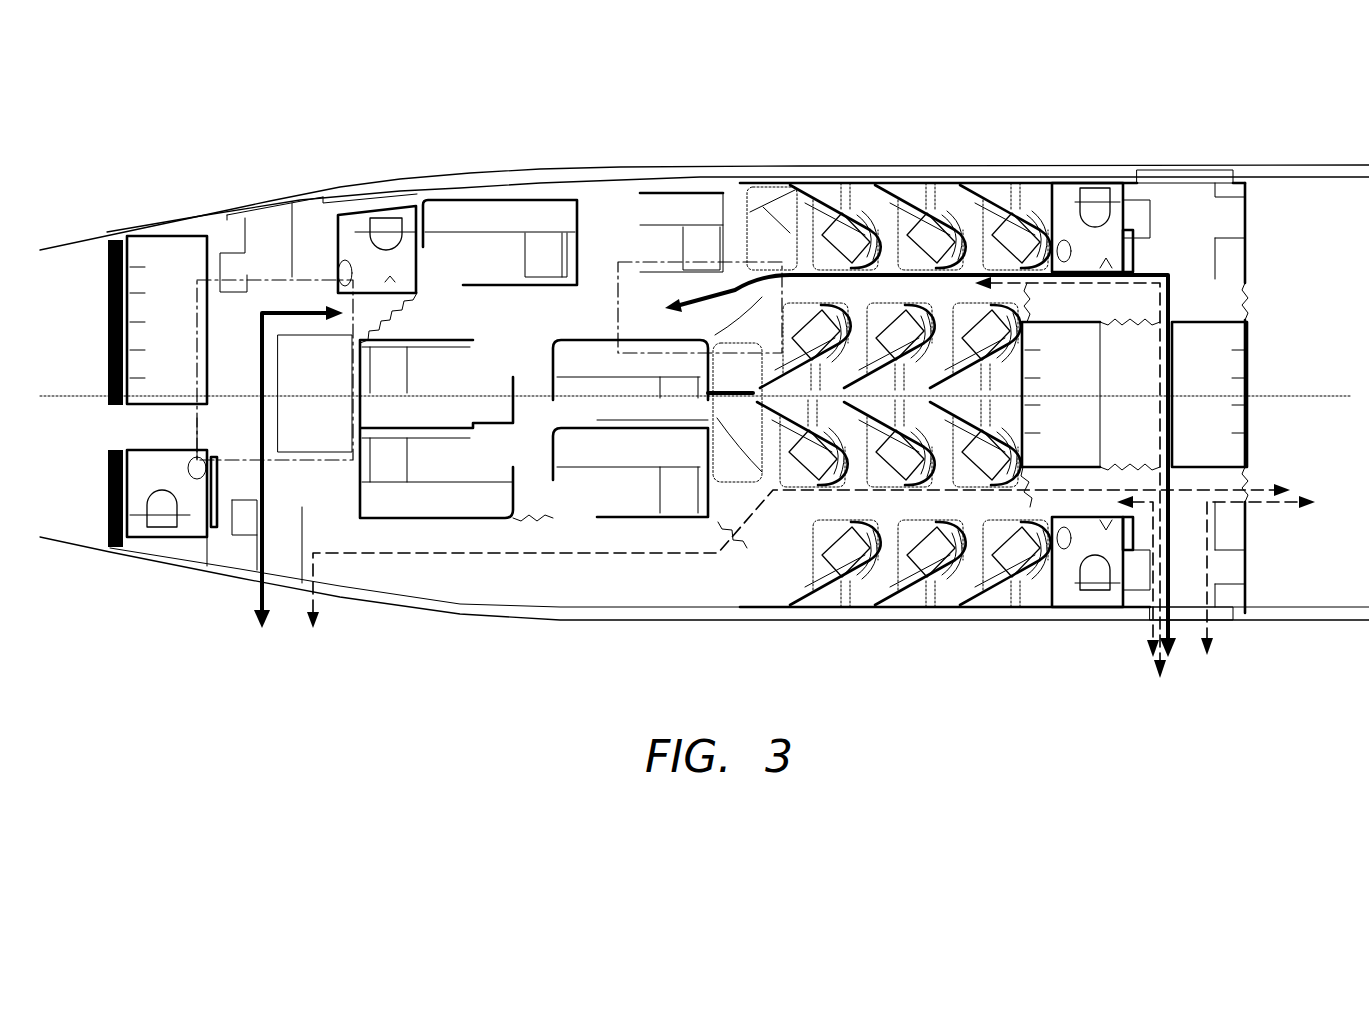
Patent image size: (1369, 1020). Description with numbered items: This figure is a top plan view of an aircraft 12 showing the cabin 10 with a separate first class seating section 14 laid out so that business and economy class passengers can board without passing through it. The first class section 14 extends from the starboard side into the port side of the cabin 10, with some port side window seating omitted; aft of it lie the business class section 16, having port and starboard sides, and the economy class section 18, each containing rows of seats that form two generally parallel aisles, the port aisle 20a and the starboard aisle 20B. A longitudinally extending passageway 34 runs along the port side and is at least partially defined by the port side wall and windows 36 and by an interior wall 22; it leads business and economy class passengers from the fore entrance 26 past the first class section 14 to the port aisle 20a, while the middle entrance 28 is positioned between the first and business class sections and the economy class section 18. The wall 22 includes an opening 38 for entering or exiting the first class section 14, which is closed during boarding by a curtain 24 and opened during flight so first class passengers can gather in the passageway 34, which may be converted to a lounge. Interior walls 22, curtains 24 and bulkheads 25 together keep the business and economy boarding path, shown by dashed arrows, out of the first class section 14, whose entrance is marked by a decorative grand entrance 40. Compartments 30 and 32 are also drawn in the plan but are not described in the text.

The cabin 10 is at (160, 425).
The aircraft 12 is at (447, 182).
The first class seating section 14 is at (597, 267).
The business class section 16 is at (965, 283).
The economy class section 18 is at (1311, 447).
The starboard aisle 20B is at (885, 280).
The port aisle 20a is at (972, 515).
The interior wall 22 is at (457, 520).
The curtain 24 is at (745, 278).
The bulkhead 25 is at (755, 232).
The fore entrance 26 is at (282, 592).
The middle entrance 28 is at (1187, 613).
The stowage compartment 30 is at (1146, 367).
The forward compartment 32 is at (247, 357).
The passageway 34 is at (582, 593).
The port side wall and windows 36 is at (653, 612).
The opening 38 is at (570, 520).
The grand entrance 40 is at (222, 455).